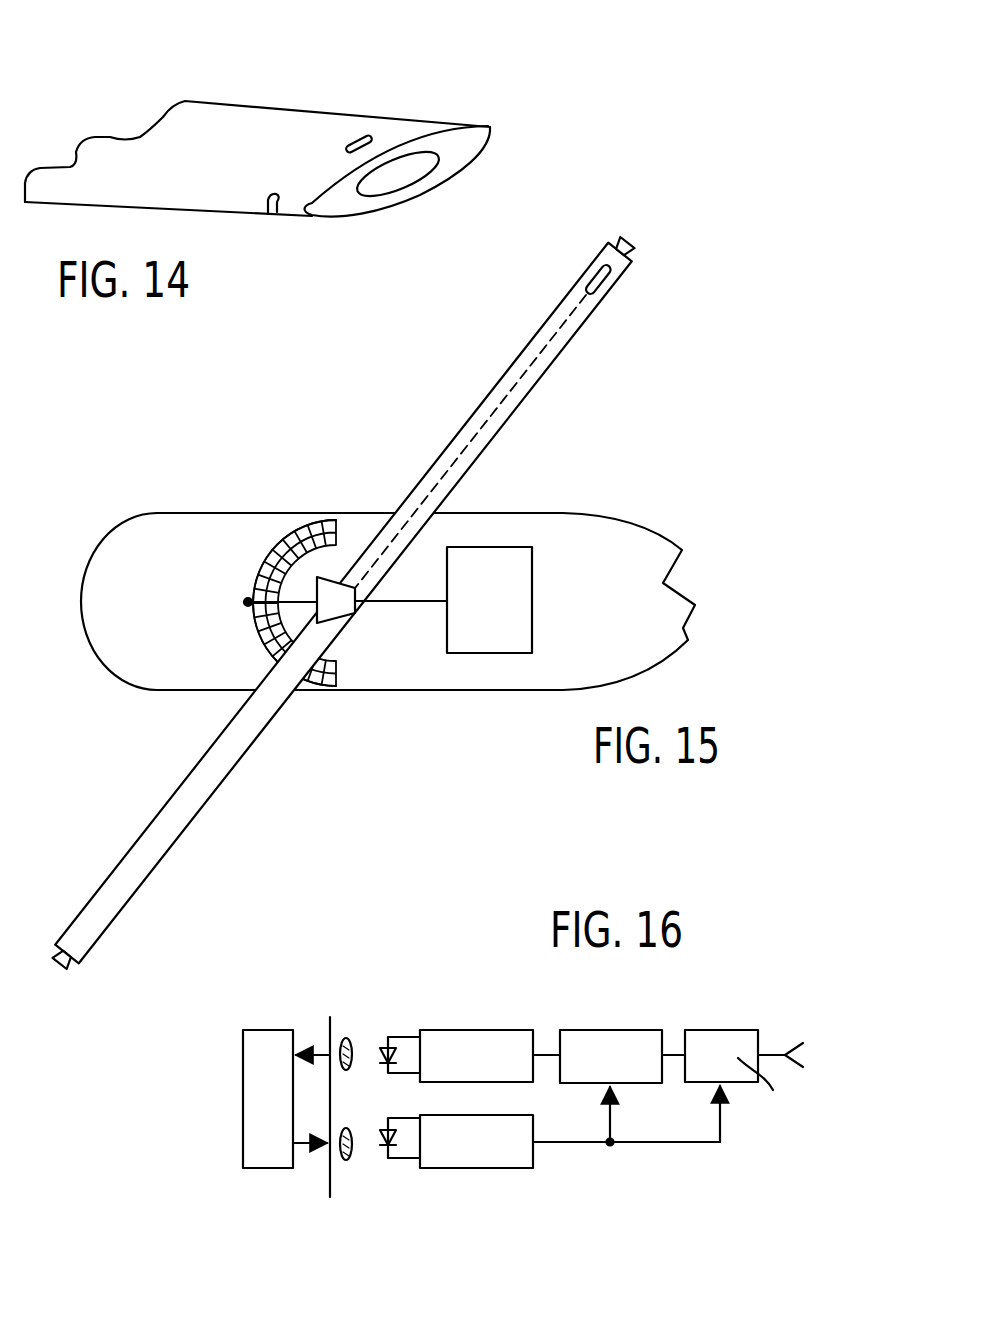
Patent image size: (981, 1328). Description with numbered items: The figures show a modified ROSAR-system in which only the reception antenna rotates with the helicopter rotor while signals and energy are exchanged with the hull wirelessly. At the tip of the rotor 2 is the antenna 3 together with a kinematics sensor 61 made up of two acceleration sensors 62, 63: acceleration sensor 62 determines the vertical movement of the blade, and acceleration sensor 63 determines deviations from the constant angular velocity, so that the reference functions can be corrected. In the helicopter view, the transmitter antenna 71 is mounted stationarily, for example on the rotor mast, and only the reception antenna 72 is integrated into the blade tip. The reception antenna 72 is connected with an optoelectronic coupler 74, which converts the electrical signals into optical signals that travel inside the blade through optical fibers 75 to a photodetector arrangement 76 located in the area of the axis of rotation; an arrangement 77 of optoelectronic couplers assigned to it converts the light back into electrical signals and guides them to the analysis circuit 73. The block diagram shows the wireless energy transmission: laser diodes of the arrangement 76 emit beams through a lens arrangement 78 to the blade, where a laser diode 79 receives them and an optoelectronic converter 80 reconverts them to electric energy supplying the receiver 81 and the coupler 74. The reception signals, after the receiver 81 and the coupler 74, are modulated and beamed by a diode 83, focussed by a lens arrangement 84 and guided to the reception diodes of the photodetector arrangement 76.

In FIG. 14, the rotor 2 is at (218, 120).
In FIG. 16, the rotor 2 is at (490, 1030).
In FIG. 14, the antenna 3 is at (408, 188).
In FIG. 14, the kinematics sensor 61 is at (308, 97).
In FIG. 14, the acceleration sensor 62 is at (265, 208).
In FIG. 14, the acceleration sensor 63 is at (358, 135).
In FIG. 15, the transmitter antenna 71 is at (345, 610).
In FIG. 15, the reception antenna 72 is at (637, 246).
In FIG. 16, the reception antenna 72 is at (790, 1043).
In FIG. 15, the analysis circuit 73 is at (489, 600).
In FIG. 15, the optoelectronic coupler 74 is at (602, 290).
In FIG. 16, the optoelectronic coupler 74 is at (612, 1030).
In FIG. 15, the optical fibers 75 is at (516, 408).
In FIG. 15, the photodetector arrangement 76 is at (347, 540).
In FIG. 16, the photodetector arrangement 76 is at (268, 1099).
In FIG. 15, the arrangement of optoelectronic couplers 77 is at (299, 532).
In FIG. 16, the lens arrangement 78 is at (348, 1160).
In FIG. 16, the laser diode 79 is at (400, 1150).
In FIG. 16, the optoelectronic converter 80 is at (538, 1158).
In FIG. 16, the receiver 81 is at (718, 1030).
In FIG. 16, the diode 83 is at (378, 1053).
In FIG. 16, the lens arrangement 84 is at (346, 1037).